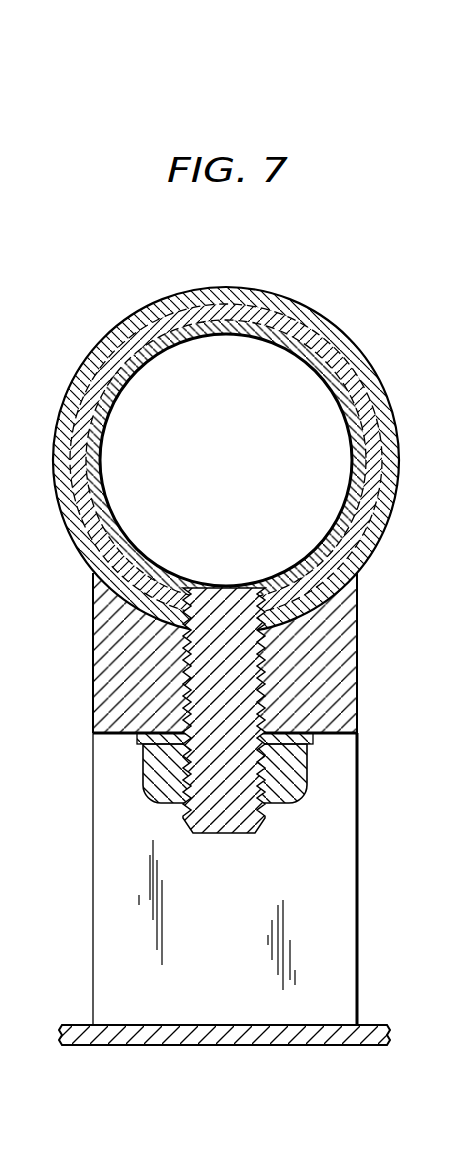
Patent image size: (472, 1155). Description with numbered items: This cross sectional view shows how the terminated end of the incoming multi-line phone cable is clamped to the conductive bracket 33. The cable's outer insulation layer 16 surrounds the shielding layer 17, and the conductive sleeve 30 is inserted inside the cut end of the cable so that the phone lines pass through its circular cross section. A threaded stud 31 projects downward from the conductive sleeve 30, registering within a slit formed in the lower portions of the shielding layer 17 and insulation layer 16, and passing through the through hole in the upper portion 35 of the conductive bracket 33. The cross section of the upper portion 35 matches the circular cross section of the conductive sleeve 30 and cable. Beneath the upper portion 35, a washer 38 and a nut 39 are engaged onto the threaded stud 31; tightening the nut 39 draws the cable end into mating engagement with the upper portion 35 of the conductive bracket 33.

The insulation layer 16 is at (373, 533).
The shielding layer 17 is at (330, 350).
The conductive sleeve 30 is at (115, 403).
The upper portion 35 is at (131, 671).
The washer 38 is at (307, 745).
The nut 39 is at (283, 788).
The threaded stud 31 is at (223, 833).
The conductive bracket 33 is at (236, 996).